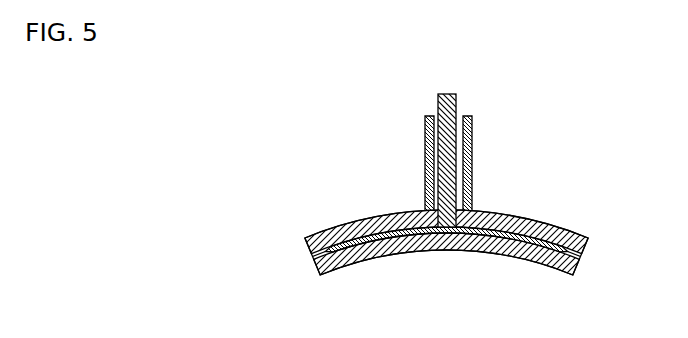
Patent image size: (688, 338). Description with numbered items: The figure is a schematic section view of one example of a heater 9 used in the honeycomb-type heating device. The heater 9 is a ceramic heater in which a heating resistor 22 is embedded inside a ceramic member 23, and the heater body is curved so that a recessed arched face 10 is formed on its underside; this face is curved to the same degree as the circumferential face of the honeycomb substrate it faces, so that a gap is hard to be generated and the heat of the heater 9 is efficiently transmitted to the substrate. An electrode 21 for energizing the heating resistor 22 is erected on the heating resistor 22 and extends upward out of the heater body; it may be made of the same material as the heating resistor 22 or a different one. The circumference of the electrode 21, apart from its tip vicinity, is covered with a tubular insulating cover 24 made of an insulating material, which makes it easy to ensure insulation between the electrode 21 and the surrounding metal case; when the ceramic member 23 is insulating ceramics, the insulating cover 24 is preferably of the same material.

The heater 9 is at (522, 216).
The recessed arched face 10 is at (427, 249).
The electrode 21 is at (457, 106).
The heating resistor 22 is at (405, 214).
The ceramic member 23 is at (358, 226).
The insulating cover 24 is at (472, 163).